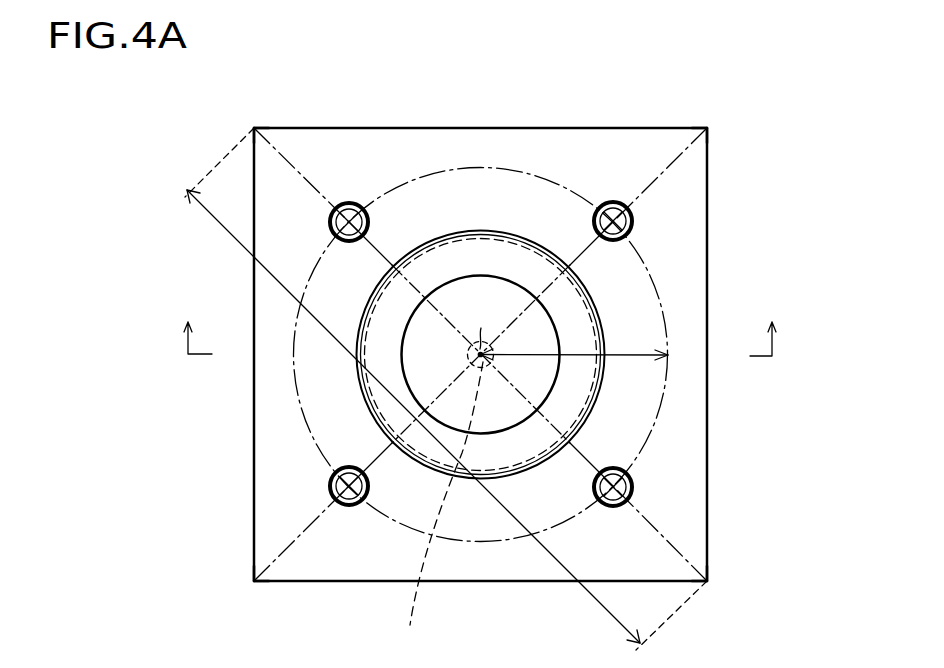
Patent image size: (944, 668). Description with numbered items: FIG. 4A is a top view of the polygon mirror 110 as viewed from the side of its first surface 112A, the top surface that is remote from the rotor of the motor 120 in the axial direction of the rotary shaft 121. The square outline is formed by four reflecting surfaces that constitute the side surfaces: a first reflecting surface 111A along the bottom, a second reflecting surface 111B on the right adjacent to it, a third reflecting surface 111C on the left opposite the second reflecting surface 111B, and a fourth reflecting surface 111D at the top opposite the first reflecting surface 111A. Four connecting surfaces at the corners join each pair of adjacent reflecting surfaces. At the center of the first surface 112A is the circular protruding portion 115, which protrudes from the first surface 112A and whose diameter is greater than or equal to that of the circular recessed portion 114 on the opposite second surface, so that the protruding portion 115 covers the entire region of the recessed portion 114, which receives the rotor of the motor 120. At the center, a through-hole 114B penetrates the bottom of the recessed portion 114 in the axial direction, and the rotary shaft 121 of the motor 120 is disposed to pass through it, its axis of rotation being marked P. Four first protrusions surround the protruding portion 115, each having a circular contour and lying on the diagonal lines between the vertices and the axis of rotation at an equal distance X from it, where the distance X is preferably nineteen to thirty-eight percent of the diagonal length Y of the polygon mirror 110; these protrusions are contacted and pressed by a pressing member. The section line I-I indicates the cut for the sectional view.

The polygon mirror 110 is at (613, 69).
The first reflecting surface 111A is at (492, 581).
The second reflecting surface 111B is at (707, 447).
The third reflecting surface 111C is at (254, 417).
The fourth reflecting surface 111D is at (559, 128).
The first surface 112A is at (312, 157).
The recessed portion 114 is at (572, 318).
The through-hole 114B is at (439, 289).
The protruding portion 115 is at (490, 248).
The motor 120 is at (436, 507).
The rotary shaft 121 is at (436, 507).